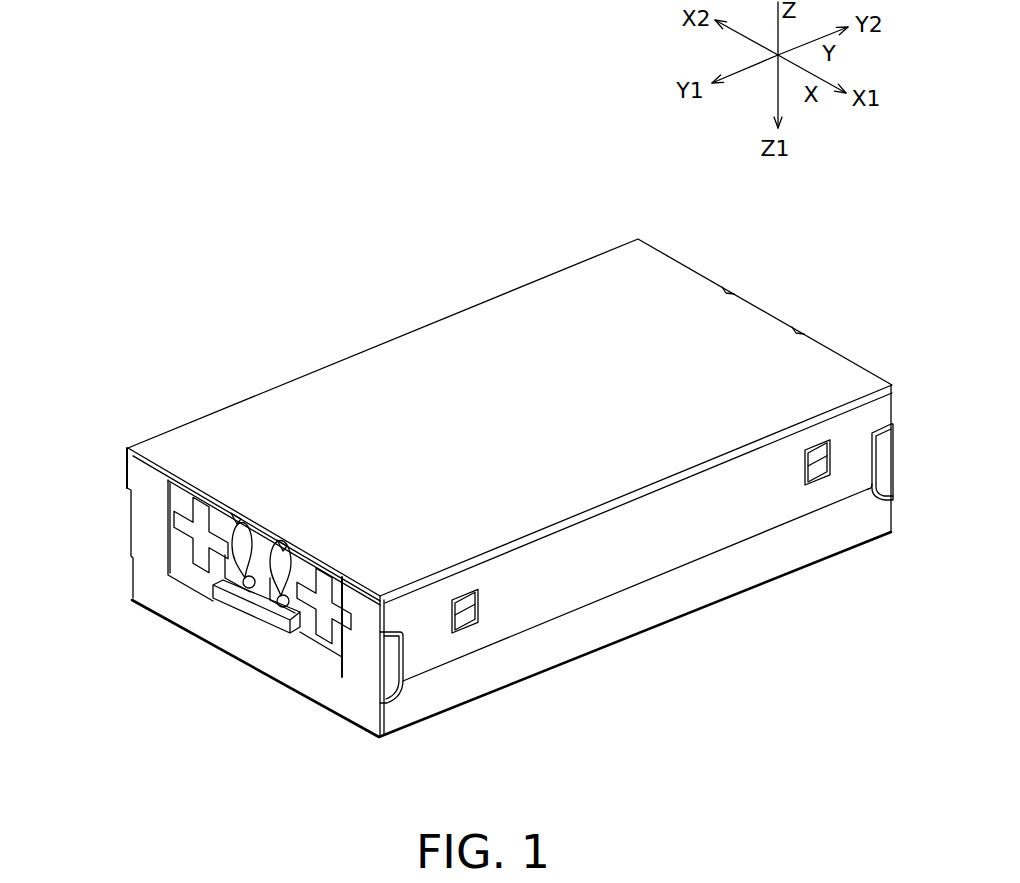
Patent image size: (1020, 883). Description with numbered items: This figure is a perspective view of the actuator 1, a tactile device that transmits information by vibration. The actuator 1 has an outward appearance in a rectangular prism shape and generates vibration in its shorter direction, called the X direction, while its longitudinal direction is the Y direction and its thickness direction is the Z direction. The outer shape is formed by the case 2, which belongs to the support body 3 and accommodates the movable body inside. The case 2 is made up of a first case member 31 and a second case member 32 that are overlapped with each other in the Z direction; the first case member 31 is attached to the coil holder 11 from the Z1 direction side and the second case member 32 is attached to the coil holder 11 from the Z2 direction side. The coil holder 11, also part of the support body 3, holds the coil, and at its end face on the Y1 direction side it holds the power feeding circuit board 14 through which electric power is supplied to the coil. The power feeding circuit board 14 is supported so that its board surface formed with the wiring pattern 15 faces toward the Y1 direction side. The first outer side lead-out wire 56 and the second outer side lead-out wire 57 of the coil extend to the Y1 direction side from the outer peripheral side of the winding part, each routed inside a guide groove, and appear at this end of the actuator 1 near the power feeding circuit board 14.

The actuator 1 is at (306, 280).
The case 2 is at (808, 262).
The support body 3 is at (722, 270).
The first case member 31 is at (795, 548).
The second case member 32 is at (718, 378).
The coil holder 11 is at (222, 632).
The power feeding circuit board 14 is at (176, 555).
The wiring pattern 15 is at (198, 534).
The first outer side lead-out wire 56 is at (281, 608).
The second outer side lead-out wire 57 is at (236, 584).